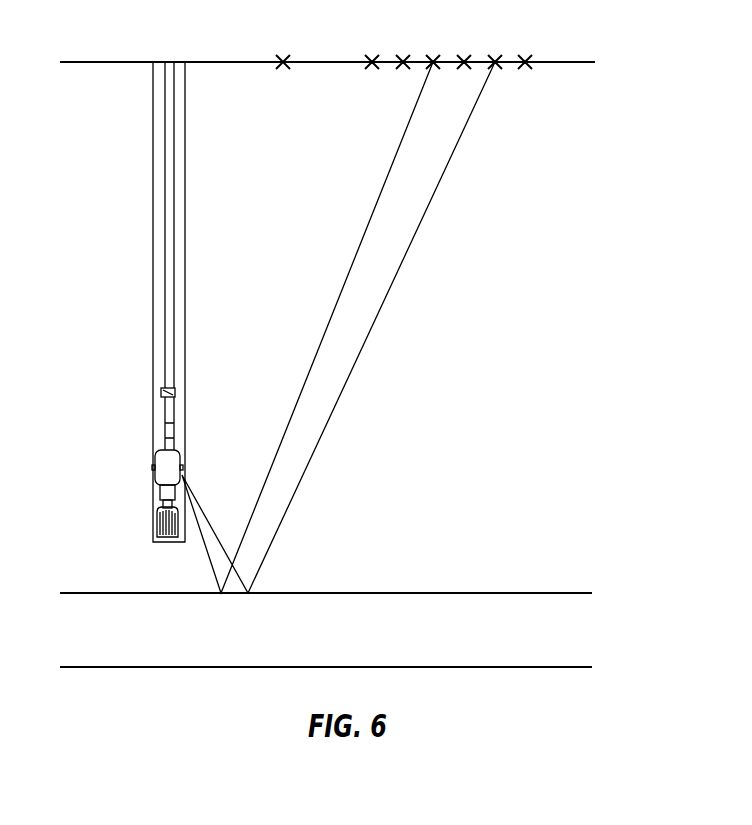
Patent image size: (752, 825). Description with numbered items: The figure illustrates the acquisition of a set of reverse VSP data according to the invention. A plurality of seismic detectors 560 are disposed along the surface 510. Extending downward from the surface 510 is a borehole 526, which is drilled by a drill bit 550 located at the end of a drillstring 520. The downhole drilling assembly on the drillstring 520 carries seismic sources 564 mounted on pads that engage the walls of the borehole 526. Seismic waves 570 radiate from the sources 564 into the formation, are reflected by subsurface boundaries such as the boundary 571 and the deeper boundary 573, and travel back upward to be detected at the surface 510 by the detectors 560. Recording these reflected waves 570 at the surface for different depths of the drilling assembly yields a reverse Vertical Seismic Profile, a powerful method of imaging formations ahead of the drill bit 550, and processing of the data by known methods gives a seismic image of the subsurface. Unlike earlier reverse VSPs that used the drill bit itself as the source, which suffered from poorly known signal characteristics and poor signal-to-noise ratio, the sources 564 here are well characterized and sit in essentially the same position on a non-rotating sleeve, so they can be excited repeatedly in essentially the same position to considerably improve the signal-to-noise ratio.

The surface 510 is at (278, 53).
The drillstring 520 is at (163, 260).
The borehole 526 is at (152, 165).
The drill bit 550 is at (157, 520).
The seismic detectors 560 is at (538, 49).
The seismic sources 564 is at (155, 468).
The seismic waves 570 is at (377, 317).
The boundary 571 is at (428, 593).
The boundary 573 is at (428, 667).